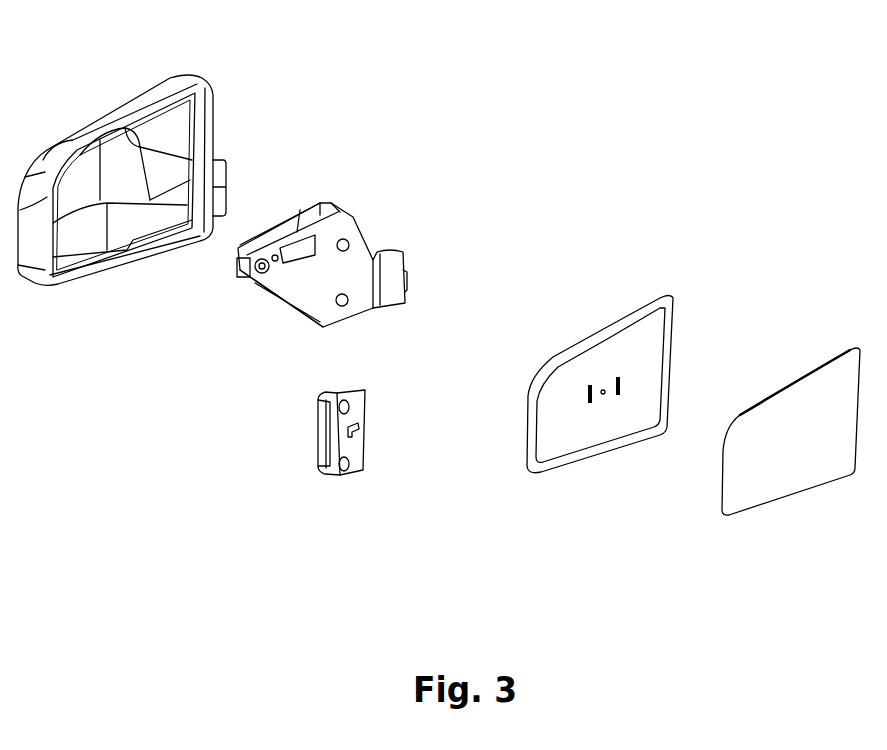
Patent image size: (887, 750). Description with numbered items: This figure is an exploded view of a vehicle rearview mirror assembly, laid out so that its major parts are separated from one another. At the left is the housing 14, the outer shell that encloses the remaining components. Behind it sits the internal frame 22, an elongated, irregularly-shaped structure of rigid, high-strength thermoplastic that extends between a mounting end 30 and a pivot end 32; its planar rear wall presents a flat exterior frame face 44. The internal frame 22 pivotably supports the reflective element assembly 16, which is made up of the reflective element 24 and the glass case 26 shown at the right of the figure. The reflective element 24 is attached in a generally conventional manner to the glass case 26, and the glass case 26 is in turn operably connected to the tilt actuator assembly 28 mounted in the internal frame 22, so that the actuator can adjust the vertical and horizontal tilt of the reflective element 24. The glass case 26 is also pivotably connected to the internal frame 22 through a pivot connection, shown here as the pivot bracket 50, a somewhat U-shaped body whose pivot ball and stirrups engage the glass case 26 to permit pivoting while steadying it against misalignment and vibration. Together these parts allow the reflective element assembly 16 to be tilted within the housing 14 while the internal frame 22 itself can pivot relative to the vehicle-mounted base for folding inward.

The housing 14 is at (175, 80).
The reflective element assembly 16 is at (684, 230).
The internal frame 22 is at (322, 285).
The reflective element 24 is at (822, 378).
The glass case 26 is at (663, 327).
The tilt actuator assembly 28 is at (317, 459).
The mounting end 30 is at (268, 299).
The pivot end 32 is at (405, 260).
The exterior frame face 44 is at (310, 287).
The pivot bracket 50 is at (237, 278).